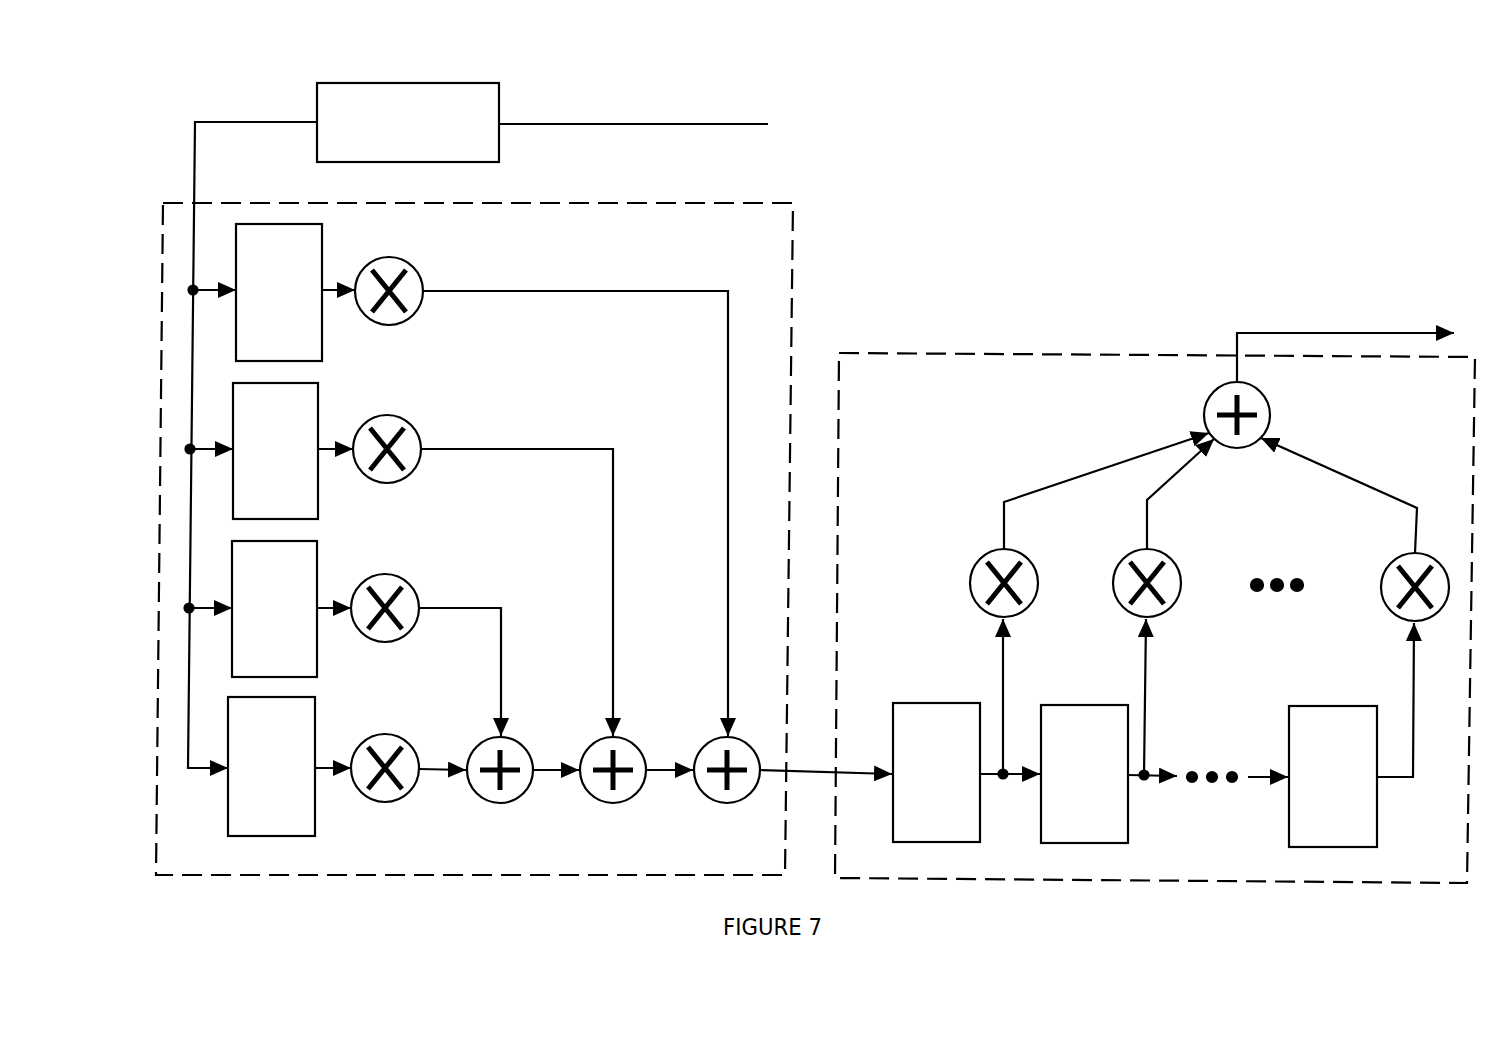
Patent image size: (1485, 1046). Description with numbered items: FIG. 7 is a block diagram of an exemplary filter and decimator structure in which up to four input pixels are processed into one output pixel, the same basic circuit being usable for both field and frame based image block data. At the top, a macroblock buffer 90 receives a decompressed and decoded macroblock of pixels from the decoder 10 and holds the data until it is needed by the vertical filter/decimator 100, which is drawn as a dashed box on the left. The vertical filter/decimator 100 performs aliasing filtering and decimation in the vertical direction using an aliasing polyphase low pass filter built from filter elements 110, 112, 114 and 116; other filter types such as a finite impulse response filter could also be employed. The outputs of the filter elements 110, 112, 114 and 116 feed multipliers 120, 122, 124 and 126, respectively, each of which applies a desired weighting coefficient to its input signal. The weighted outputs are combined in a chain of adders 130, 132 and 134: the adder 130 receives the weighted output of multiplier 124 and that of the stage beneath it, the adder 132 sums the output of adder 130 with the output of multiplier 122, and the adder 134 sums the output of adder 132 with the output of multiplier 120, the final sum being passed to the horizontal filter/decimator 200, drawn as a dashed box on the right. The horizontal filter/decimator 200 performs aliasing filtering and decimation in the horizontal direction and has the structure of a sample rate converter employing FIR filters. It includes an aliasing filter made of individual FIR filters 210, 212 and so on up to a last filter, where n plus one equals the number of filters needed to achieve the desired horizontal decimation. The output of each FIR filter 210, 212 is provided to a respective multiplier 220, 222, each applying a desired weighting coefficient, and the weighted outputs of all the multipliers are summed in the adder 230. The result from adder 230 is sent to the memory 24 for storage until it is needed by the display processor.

The decoder 10 is at (633, 110).
The memory 24 is at (1345, 344).
The macroblock buffer 90 is at (499, 142).
The vertical filter/decimator 100 is at (250, 876).
The filter element 110 is at (261, 302).
The filter element 112 is at (257, 461).
The filter element 114 is at (256, 620).
The fourth block unit 116 is at (253, 780).
The multiplier 120 is at (437, 262).
The multiplier 122 is at (435, 420).
The multiplier 124 is at (432, 582).
The fourth multiplier 126 is at (428, 738).
The adder 130 is at (540, 738).
The adder 132 is at (653, 738).
The third adder 134 is at (766, 738).
The horizontal filter/decimator 200 is at (927, 880).
The FIR filter 210 is at (918, 786).
The FIR filter 212 is at (1066, 787).
The multiplier 220 is at (1052, 553).
The multiplier 222 is at (1192, 553).
The adder 230 is at (1288, 395).